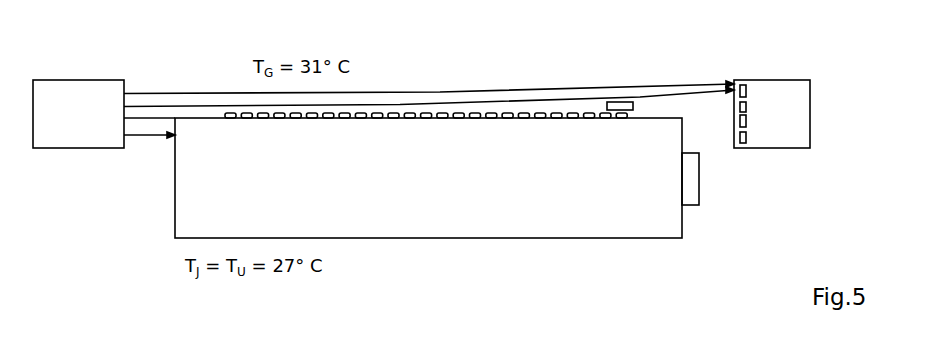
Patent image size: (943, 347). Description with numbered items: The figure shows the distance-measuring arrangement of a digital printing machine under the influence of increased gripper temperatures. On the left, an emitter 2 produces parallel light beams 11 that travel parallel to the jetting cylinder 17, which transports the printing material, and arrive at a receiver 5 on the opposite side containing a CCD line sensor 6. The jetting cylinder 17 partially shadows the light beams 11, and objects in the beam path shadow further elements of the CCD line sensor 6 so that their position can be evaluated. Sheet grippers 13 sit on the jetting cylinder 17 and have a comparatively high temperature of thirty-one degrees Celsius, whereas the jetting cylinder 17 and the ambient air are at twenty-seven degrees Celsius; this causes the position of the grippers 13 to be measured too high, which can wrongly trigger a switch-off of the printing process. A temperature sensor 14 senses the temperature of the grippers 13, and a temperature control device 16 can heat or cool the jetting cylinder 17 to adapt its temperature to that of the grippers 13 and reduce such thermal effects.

The emitter 2 is at (75, 92).
The receiver 5 is at (775, 88).
The CCD line sensor 6 is at (746, 138).
The light beams 11 is at (448, 92).
The sheet grippers 13 is at (597, 112).
The temperature sensor 14 is at (620, 102).
The temperature control device 16 is at (693, 190).
The jetting cylinder 17 is at (457, 220).